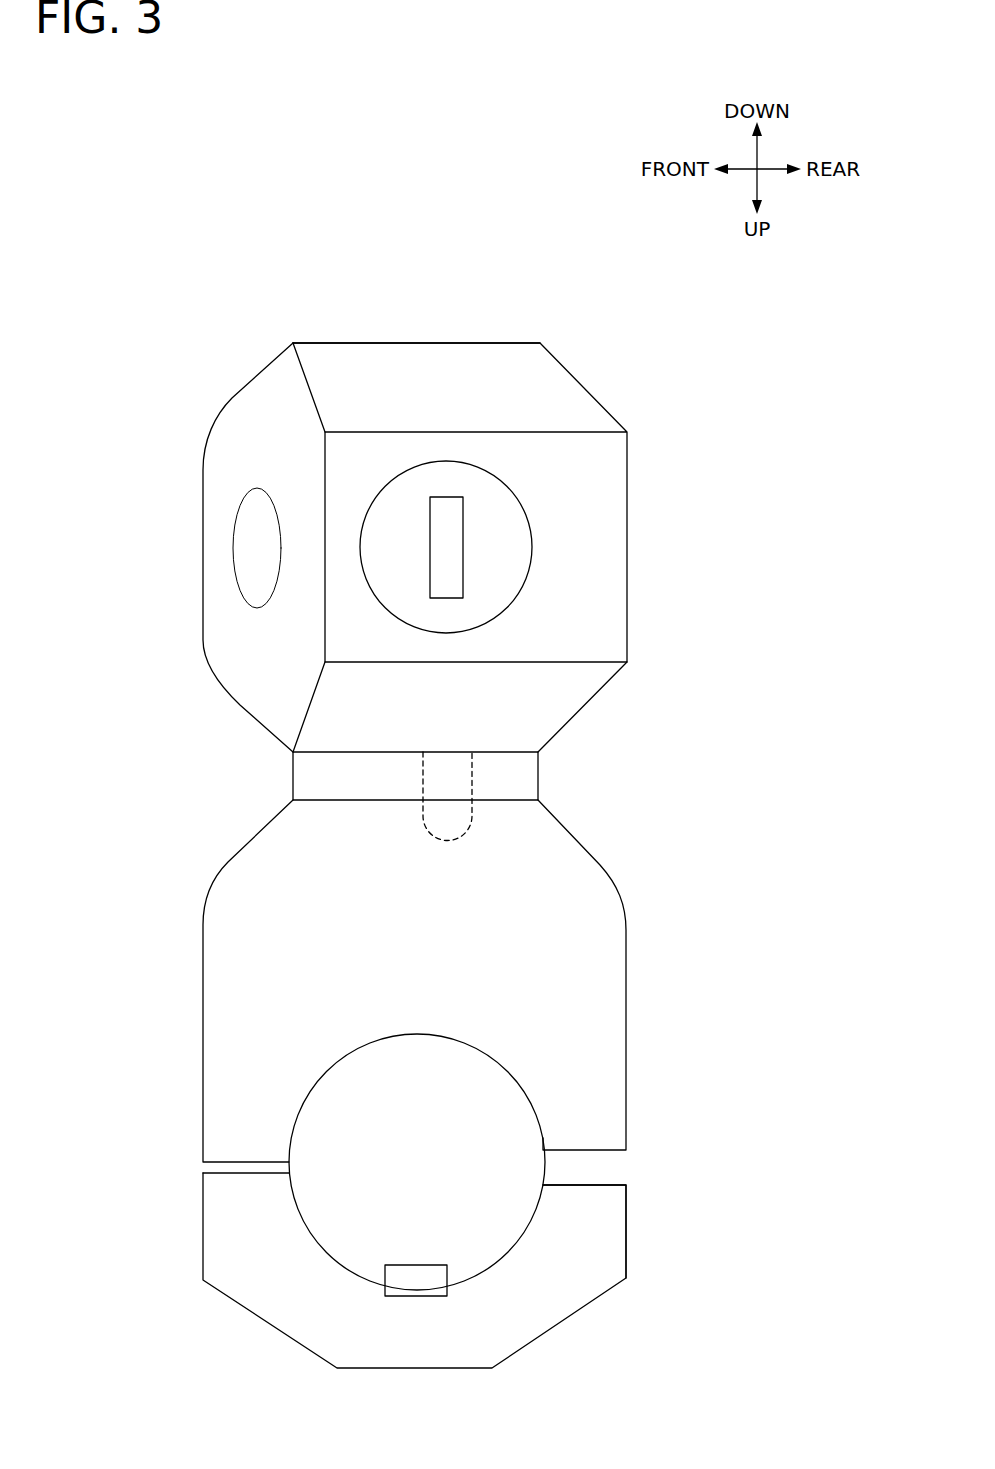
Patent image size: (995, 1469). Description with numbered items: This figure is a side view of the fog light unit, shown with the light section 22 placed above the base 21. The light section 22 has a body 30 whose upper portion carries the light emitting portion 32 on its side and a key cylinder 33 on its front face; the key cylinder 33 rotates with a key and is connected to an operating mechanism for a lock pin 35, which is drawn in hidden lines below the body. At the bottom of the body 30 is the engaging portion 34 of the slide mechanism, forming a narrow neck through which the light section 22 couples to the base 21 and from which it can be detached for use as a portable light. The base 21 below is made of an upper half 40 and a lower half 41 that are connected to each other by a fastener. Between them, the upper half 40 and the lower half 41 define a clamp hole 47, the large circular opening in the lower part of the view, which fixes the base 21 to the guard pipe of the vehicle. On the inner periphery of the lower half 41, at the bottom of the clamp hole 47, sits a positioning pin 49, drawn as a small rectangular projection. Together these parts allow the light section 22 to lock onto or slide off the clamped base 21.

The base 21 is at (622, 862).
The light section 22 is at (338, 340).
The body 30 is at (557, 388).
The light emitting portion 32 is at (249, 418).
The key cylinder 33 is at (503, 528).
The engaging portion 34 is at (522, 780).
The lock pin 35 is at (425, 775).
The upper half 40 is at (600, 985).
The lower half 41 is at (602, 1217).
The clamp hole 47 is at (448, 1157).
The positioning pin 49 is at (427, 1265).